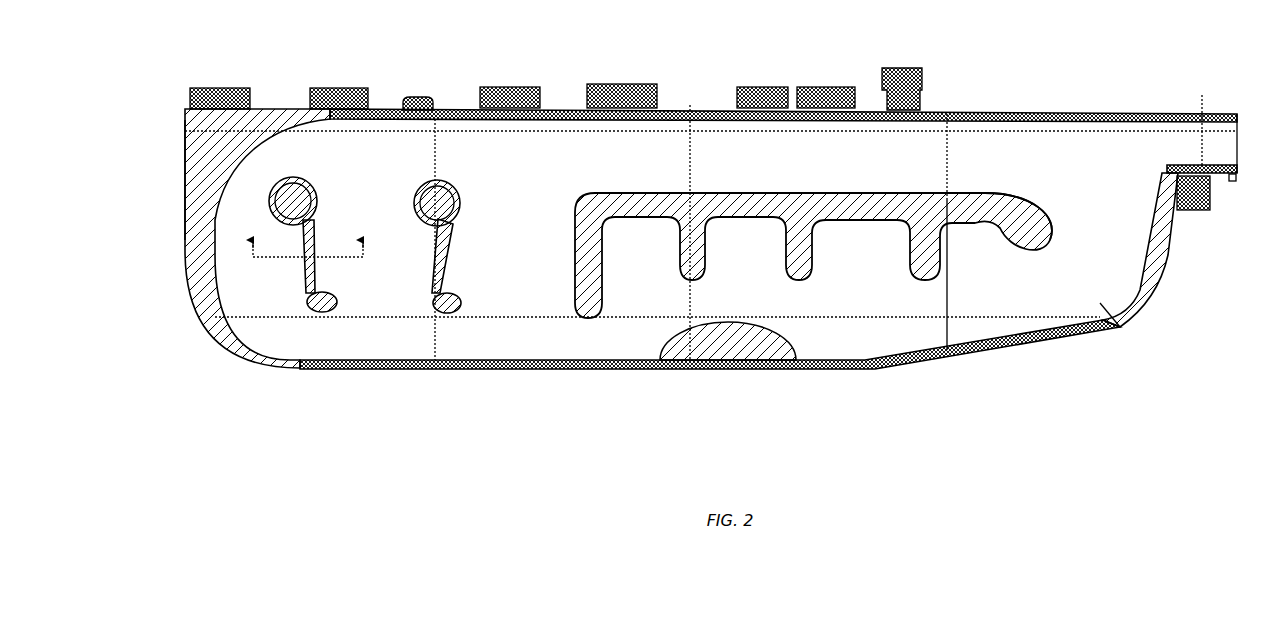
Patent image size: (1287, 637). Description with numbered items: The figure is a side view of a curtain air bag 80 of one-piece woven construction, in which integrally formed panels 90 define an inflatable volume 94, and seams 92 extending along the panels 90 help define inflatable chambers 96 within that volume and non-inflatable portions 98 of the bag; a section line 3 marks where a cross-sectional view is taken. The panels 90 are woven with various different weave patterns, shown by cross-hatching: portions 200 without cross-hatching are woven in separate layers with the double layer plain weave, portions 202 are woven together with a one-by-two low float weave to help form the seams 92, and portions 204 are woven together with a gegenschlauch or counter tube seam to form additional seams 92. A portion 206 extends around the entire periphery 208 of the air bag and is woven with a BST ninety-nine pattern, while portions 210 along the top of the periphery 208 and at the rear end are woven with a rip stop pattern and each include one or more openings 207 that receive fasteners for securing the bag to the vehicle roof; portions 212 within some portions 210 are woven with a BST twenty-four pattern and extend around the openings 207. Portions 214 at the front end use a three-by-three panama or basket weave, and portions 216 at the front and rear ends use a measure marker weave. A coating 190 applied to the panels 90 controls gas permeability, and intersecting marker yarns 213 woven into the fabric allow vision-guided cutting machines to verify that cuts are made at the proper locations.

The section line 3- 3 is at (308, 241).
The curtain air bag 80 is at (1060, 350).
The panels 90 is at (1110, 322).
The seams 92 is at (897, 122).
The inflatable volume 94 is at (515, 360).
The inflatable chambers 96 is at (1080, 216).
The non-inflatable portions 98 is at (868, 196).
The coating 190 is at (735, 362).
The double layer plain weave portions 200 is at (498, 188).
The low float weave portions 202 is at (1237, 118).
The gegenschlauch seam portions 204 is at (1052, 238).
The BST 99 weave portion 206 is at (274, 198).
The openings 207 is at (196, 90).
The periphery 208 is at (1105, 112).
The rip stop weave portions 210 is at (213, 88).
The BST 24 weave portions 212 is at (355, 96).
The marker yarns 213 is at (948, 285).
The panama/basket weave portions 214 is at (196, 187).
The measure marker weave portions 216 is at (200, 245).